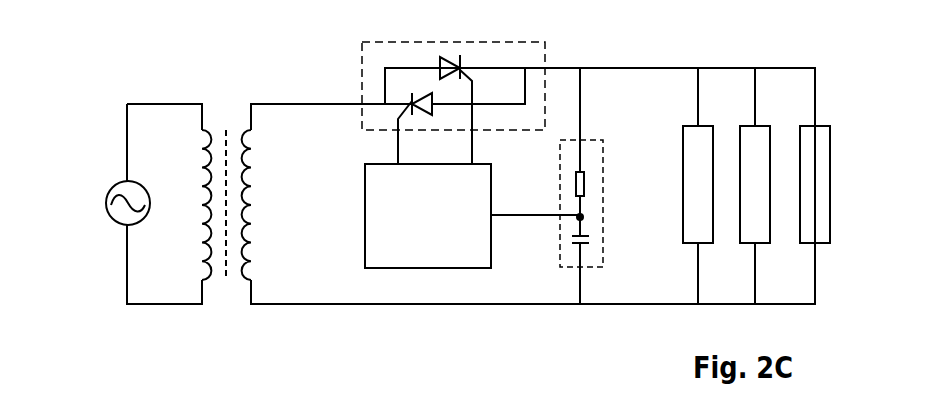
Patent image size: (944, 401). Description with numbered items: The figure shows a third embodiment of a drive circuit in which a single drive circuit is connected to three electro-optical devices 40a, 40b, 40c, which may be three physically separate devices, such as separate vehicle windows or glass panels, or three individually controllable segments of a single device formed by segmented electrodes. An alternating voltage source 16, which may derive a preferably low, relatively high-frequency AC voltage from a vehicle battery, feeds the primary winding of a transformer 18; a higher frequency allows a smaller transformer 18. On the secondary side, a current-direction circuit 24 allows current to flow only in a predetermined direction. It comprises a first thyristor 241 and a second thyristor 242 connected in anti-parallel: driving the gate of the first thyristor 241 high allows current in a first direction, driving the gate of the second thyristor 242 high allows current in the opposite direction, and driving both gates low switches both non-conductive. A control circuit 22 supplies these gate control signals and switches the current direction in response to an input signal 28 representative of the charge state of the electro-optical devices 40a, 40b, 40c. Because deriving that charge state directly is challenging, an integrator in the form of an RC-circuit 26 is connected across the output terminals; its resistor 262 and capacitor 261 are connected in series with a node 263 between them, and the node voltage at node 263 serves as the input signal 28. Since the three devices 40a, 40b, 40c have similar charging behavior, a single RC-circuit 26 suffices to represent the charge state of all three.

The alternating voltage source 16 is at (118, 224).
The transformer 18 is at (225, 99).
The control circuit 22 is at (428, 216).
The current-direction circuit 24 is at (449, 92).
The first thyristor 241 is at (429, 99).
The second thyristor 242 is at (452, 66).
The RC-circuit 26 is at (609, 233).
The capacitor 261 is at (578, 242).
The resistor 262 is at (582, 183).
The node 263 is at (586, 219).
The input signal 28 is at (522, 216).
The electro-optical device 40a is at (702, 140).
The electro-optical device 40b is at (754, 138).
The electro-optical device 40c is at (810, 138).